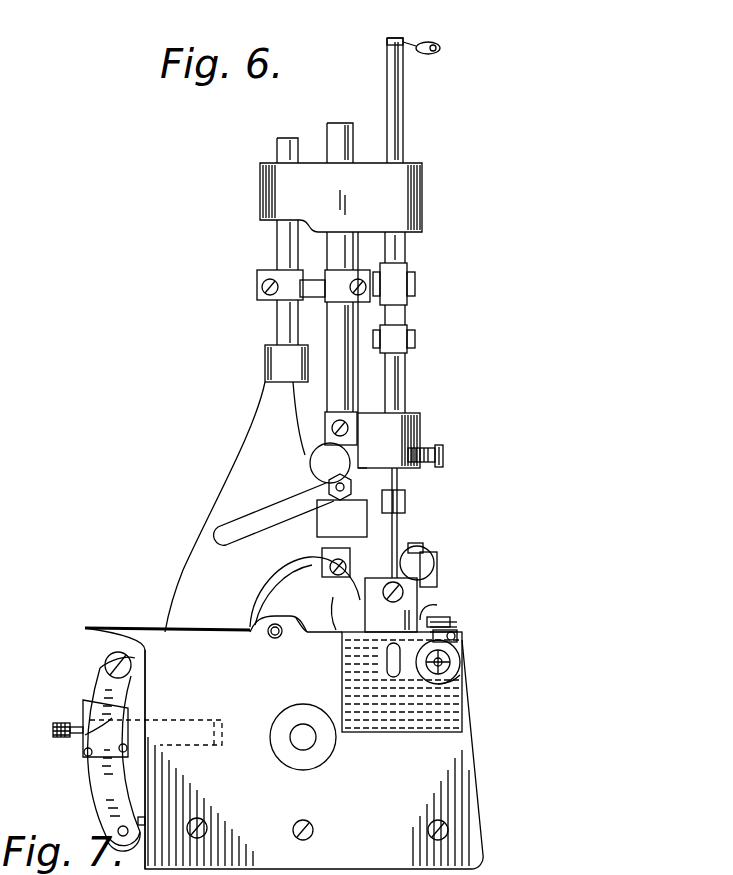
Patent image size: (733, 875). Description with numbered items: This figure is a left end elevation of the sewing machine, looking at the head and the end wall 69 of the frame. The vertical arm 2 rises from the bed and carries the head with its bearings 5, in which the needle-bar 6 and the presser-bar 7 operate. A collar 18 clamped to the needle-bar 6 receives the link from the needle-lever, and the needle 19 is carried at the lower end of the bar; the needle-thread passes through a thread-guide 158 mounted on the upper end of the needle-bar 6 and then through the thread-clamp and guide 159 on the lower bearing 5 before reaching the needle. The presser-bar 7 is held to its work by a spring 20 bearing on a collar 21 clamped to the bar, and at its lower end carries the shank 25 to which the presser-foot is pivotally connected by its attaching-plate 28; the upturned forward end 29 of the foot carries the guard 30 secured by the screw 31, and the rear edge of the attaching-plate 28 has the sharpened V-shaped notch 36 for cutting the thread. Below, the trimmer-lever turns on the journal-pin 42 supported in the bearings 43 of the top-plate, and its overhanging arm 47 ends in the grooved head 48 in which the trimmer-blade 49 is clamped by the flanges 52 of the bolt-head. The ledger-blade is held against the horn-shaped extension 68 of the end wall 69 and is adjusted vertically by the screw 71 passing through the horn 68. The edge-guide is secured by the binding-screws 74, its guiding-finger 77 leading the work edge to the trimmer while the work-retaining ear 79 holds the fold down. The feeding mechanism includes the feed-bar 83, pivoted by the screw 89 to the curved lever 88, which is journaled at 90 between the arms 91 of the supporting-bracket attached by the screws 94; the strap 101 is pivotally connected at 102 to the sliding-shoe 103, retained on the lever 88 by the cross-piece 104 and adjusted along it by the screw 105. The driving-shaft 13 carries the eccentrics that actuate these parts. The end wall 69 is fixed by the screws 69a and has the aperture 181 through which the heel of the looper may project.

The vertical arm 2 is at (267, 450).
The bearings 5 is at (386, 191).
The needle-bar 6 is at (398, 142).
The presser-bar 7 is at (338, 128).
The driving-shaft 13 is at (303, 737).
The collar 18 is at (460, 662).
The needle 19 is at (397, 520).
The spring 20 is at (310, 268).
The collar 21 is at (337, 290).
The shank 25 is at (365, 600).
The attaching-plate 28 is at (373, 608).
The upturned forward end 29 is at (450, 623).
The guard 30 is at (430, 610).
The screw 31 is at (430, 620).
The V-shaped notch 36 is at (345, 624).
The journal-pin 42 is at (268, 635).
The bearings 43 is at (265, 620).
The overhanging arm 47 is at (277, 575).
The grooved head 48 is at (420, 580).
The trimmer-blade 49 is at (413, 545).
The flanges 52 is at (432, 550).
The horn-shaped extension 68 is at (440, 693).
The end wall 69 is at (284, 748).
The screws 69a is at (430, 823).
The screw 71 is at (463, 670).
The binding-screws 74 is at (458, 638).
The guiding-finger 77 is at (453, 627).
The work-retaining ear 79 is at (457, 627).
The feed-bar 83 is at (132, 665).
The curved lever 88 is at (100, 687).
The screw 89 is at (108, 660).
The journal 90 is at (123, 836).
The arms 91 is at (108, 832).
The screws 94 is at (142, 820).
The strap 101 is at (181, 724).
The pivotal connection 102 is at (97, 733).
The sliding-shoe 103 is at (85, 712).
The cross-piece 104 is at (97, 758).
The screw 105 is at (52, 730).
The thread-guide 158 is at (428, 50).
The thread-clamp and guide 159 is at (425, 450).
The aperture 181 is at (342, 658).